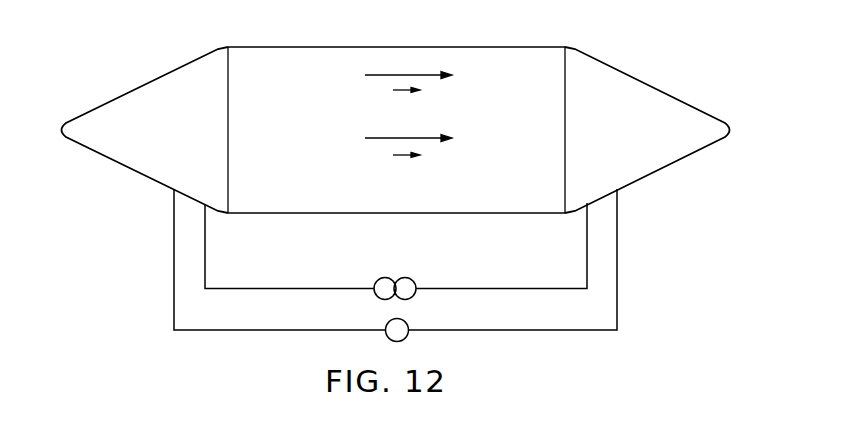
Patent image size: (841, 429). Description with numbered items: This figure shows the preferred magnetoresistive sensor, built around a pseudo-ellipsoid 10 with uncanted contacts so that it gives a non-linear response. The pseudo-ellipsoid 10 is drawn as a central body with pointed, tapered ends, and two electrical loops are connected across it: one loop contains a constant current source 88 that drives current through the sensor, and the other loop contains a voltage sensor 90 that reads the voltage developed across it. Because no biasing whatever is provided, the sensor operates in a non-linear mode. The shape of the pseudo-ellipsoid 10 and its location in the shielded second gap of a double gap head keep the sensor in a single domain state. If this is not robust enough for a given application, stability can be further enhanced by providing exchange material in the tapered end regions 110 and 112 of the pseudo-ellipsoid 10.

The pseudo-ellipsoid 10 is at (492, 63).
The region 110 is at (160, 92).
The region 112 is at (642, 105).
The voltage sensor 90 is at (297, 288).
The constant current source 88 is at (292, 330).